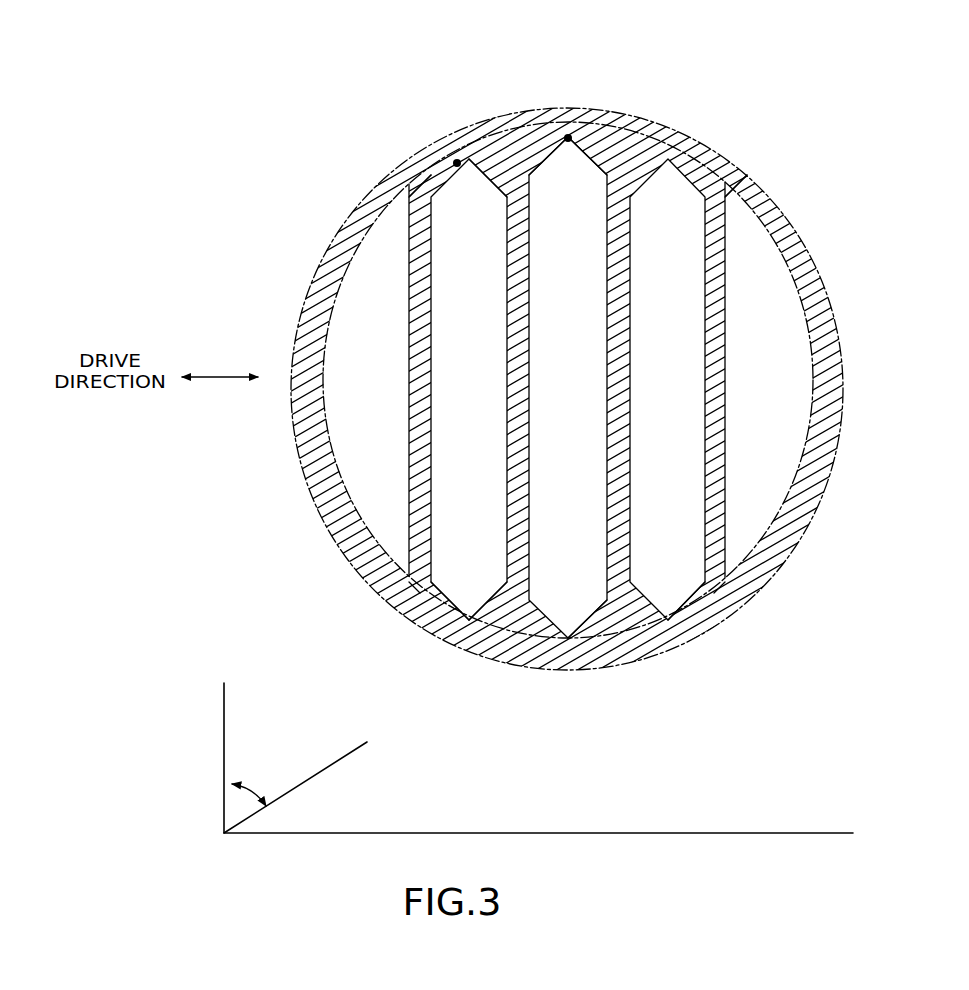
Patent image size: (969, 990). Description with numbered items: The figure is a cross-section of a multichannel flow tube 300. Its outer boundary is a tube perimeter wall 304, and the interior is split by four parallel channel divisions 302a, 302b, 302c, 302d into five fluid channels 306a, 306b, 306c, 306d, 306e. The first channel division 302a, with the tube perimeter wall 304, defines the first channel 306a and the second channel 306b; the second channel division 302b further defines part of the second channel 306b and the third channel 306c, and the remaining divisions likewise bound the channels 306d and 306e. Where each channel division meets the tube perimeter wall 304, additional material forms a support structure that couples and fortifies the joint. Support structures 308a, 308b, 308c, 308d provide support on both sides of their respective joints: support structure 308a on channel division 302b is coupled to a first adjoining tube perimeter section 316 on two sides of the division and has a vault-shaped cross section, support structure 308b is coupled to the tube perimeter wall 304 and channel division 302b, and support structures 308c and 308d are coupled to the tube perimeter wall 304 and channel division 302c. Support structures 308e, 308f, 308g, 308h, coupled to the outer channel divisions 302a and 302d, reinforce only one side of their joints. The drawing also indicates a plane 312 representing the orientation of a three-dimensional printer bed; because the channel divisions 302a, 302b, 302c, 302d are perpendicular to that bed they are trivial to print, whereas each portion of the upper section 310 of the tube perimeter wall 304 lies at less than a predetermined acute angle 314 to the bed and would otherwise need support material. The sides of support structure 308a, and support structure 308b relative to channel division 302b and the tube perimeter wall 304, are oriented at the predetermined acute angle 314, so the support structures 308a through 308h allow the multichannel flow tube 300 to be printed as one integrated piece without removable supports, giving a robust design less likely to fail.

The multichannel flow tube 300 is at (242, 131).
The first channel division 302a is at (418, 250).
The second channel division 302b is at (437, 190).
The channel division 302c is at (617, 240).
The channel division 302d is at (712, 290).
The tube perimeter wall 304 is at (832, 345).
The first channel 306a is at (366, 380).
The second channel 306b is at (469, 389).
The third channel 306c is at (568, 387).
The fluid channel 306d is at (667, 389).
The fluid channel 306e is at (769, 380).
The first support structure 308a is at (512, 168).
The second support structure 308b is at (513, 612).
The third support structure 308c is at (615, 160).
The fourth support structure 308d is at (622, 620).
The support structure 308e is at (428, 160).
The support structure 308f is at (425, 582).
The support structure 308g is at (706, 162).
The support structure 308h is at (697, 592).
The upper section 310 is at (578, 122).
The plane 312 is at (765, 833).
The predetermined acute angle 314 is at (258, 784).
The first adjoining tube perimeter section 316 is at (520, 150).